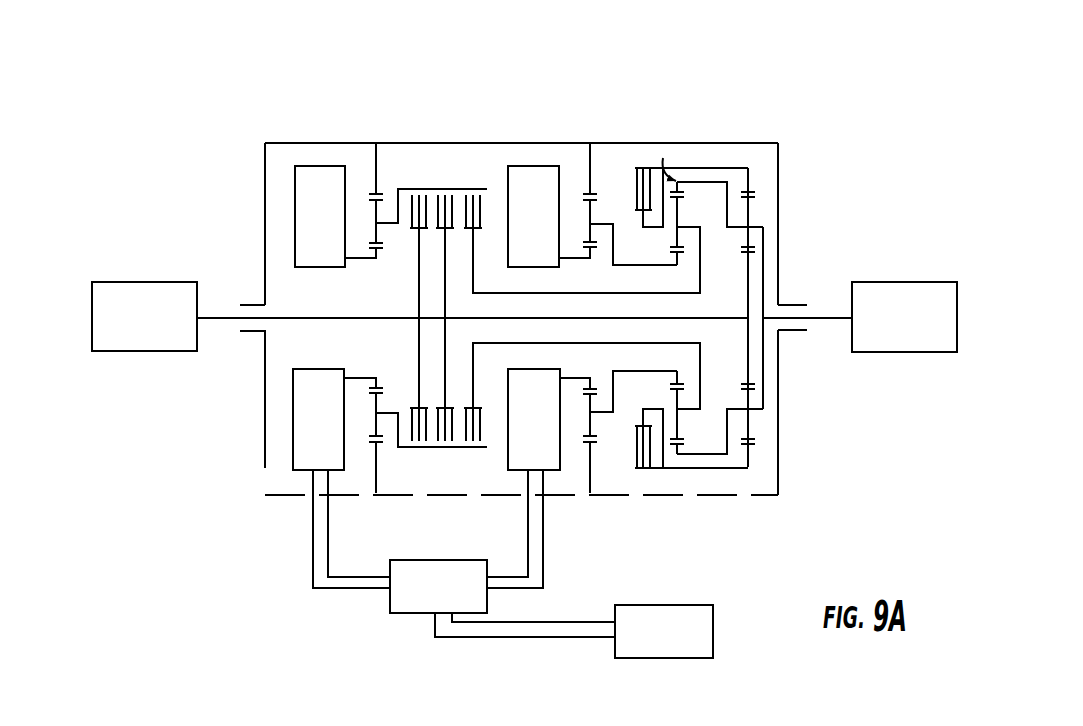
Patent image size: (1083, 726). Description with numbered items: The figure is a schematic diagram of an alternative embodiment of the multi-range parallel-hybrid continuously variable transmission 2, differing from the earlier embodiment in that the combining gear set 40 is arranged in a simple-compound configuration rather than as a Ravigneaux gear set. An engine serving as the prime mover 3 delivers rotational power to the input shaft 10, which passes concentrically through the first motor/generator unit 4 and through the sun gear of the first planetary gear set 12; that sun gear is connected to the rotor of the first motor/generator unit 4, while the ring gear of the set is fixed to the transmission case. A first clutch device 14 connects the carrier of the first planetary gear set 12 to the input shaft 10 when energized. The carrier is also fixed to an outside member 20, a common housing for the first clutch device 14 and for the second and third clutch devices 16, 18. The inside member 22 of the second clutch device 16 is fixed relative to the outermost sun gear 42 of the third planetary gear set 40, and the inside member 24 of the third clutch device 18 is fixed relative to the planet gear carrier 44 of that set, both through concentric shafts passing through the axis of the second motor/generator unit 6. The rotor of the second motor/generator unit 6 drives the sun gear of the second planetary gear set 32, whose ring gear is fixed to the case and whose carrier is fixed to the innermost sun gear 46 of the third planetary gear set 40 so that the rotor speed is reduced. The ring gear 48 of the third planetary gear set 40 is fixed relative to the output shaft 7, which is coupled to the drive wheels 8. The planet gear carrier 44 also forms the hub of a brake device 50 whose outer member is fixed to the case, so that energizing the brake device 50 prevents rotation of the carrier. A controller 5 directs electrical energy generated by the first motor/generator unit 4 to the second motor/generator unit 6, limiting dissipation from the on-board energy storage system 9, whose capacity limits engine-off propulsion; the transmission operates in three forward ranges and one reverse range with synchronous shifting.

The multi-range parallel-hybrid continuously variable transmission 2 is at (240, 525).
The prime mover 3 is at (164, 352).
The first electrical motor/generator unit 4 is at (318, 163).
The controller 5 is at (418, 600).
The second motor/generator unit 6 is at (534, 180).
The output shaft 7 is at (823, 315).
The drive wheels 8 is at (900, 288).
The on-board energy storage system 9 is at (667, 647).
The input shaft 10 is at (310, 318).
The first planetary gear set 12 is at (374, 153).
The first clutch device 14 is at (421, 186).
The second clutch device 16 is at (449, 186).
The third clutch device 18 is at (477, 186).
The outside member 20 is at (405, 449).
The inside member of the second clutch device 22 is at (448, 390).
The inside member of the third clutch device 24 is at (474, 386).
The second planetary gear set 32 is at (596, 157).
The third planetary gear set 40 is at (720, 157).
The outermost sun gear 42 is at (750, 358).
The planet gear carrier 44 is at (707, 378).
The innermost sun gear 46 is at (646, 377).
The ring gear 48 is at (766, 348).
The brake device 50 is at (650, 160).